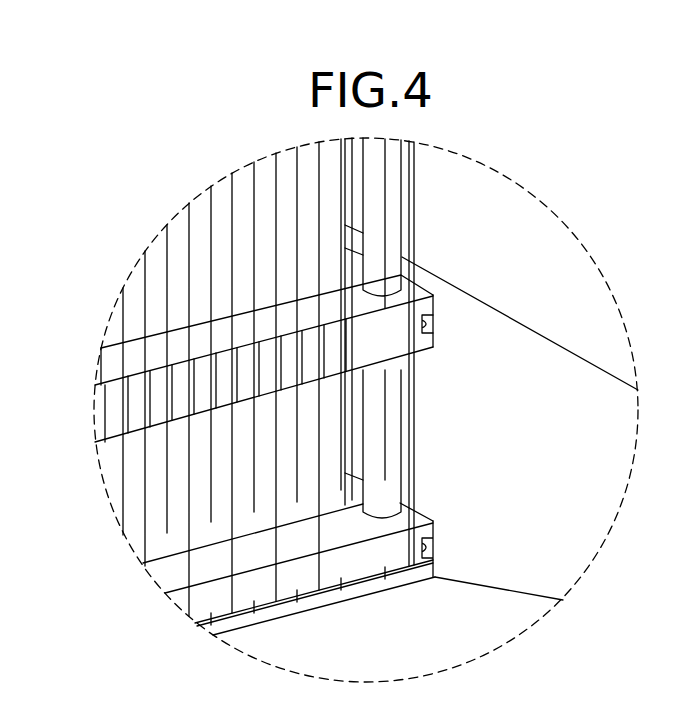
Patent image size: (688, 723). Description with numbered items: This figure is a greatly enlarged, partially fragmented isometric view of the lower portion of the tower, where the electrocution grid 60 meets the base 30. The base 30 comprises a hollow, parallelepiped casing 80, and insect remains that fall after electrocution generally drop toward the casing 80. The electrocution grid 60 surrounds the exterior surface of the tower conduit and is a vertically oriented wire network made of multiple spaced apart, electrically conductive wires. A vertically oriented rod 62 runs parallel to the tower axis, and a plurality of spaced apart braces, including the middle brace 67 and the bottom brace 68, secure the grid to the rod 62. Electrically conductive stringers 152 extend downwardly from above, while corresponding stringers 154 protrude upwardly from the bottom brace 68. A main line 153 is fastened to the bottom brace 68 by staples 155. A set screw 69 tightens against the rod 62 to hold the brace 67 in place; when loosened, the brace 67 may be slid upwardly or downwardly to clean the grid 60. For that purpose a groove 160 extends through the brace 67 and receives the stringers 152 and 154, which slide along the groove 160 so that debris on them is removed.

The electrocution grid 60 is at (117, 330).
The rod 62 is at (392, 222).
The brace 67 is at (437, 298).
The set screw 69 is at (434, 322).
The groove 160 is at (434, 348).
The stringer 152 is at (385, 449).
The stringer 154 is at (405, 521).
The bottom brace 68 is at (435, 525).
The main line 153 is at (380, 600).
The staple 155 is at (300, 601).
The casing 80 is at (505, 600).
The base 30 is at (553, 340).